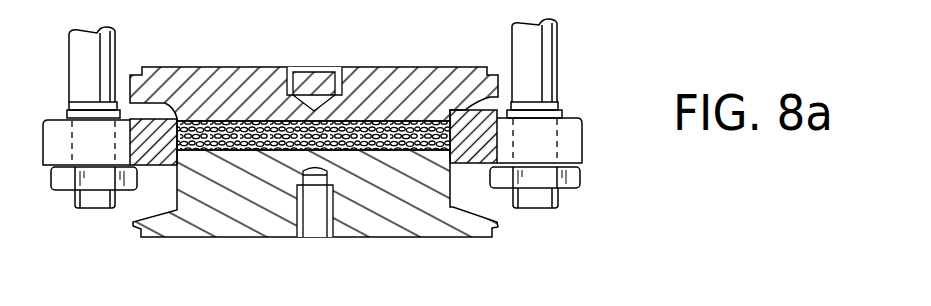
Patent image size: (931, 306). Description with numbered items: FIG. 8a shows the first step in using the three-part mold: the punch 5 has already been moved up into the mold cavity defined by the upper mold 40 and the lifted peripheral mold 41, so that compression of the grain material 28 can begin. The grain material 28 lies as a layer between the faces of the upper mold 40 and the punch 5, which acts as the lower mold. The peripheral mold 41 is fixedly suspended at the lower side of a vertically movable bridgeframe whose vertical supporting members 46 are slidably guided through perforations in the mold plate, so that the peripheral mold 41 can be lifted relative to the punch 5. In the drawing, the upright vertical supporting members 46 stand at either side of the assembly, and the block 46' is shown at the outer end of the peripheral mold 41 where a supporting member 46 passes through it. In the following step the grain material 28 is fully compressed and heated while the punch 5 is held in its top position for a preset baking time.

The punch 5 is at (405, 222).
The grain material 28 is at (231, 150).
The upper mold 40 is at (372, 72).
The peripheral mold 41 is at (474, 138).
The vertical supporting members 46 is at (344, 63).
The stud mounting block 46' is at (351, 141).